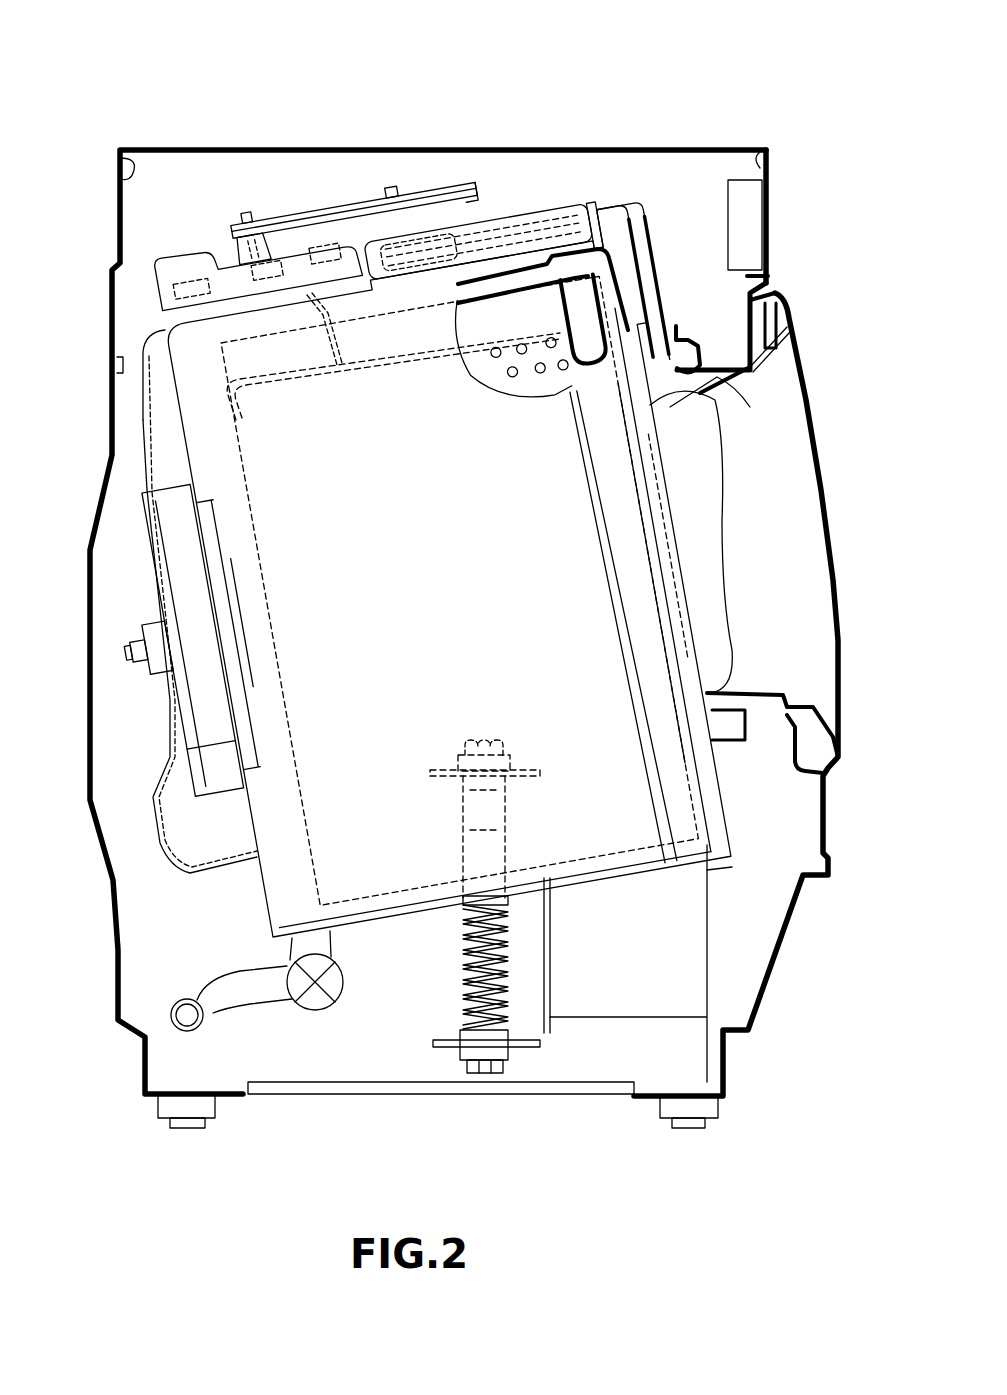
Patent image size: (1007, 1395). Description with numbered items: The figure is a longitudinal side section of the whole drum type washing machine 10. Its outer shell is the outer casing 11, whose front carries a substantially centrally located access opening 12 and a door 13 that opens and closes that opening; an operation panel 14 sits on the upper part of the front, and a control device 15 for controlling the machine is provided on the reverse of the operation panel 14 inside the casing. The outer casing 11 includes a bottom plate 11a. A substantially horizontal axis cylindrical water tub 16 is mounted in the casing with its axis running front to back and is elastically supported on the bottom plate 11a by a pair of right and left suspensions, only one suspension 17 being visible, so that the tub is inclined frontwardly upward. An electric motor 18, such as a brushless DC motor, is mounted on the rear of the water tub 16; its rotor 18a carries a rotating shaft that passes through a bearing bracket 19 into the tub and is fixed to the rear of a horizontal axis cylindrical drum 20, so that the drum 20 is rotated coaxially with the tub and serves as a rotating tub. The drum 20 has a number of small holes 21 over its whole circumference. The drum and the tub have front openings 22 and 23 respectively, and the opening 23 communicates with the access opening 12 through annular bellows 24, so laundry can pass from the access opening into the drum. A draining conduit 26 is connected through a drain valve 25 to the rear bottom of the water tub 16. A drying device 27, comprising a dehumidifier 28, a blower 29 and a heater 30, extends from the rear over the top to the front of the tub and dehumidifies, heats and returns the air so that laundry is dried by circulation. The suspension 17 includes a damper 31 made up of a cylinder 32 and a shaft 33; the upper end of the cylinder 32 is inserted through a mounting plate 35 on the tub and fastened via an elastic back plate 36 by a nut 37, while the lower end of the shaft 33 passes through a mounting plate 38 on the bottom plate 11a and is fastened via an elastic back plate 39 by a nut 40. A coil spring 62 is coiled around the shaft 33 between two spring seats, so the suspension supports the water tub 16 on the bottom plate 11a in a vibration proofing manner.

The drum type washing machine 10 is at (243, 112).
The outer casing 11 is at (412, 147).
The bottom plate 11a is at (655, 1100).
The access opening 12 is at (781, 300).
The door 13 is at (832, 478).
The operation panel 14 is at (772, 200).
The control device 15 is at (726, 214).
The water tub 16 is at (548, 262).
The suspension 17 is at (455, 922).
The electric motor 18 is at (143, 595).
The rotor 18a is at (195, 737).
The bearing bracket 19 is at (222, 598).
The drum 20 is at (525, 292).
The small holes 21 is at (522, 388).
The opening of drum 22 is at (662, 400).
The opening of water tub 23 is at (697, 340).
The bellows 24 is at (725, 382).
The drain valve 25 is at (315, 1012).
The draining conduit 26 is at (246, 1012).
The drying device 27 is at (150, 335).
The dehumidifier 28 is at (143, 425).
The blower 29 is at (178, 254).
The heater 30 is at (494, 216).
The damper 31 is at (508, 840).
The cylinder 32 is at (490, 808).
The shaft 33 is at (470, 985).
The mounting plate 35 is at (525, 769).
The elastic back plate 36 is at (455, 769).
The nut 37 is at (485, 740).
The mounting plate 38 is at (520, 1050).
The elastic back plate 39 is at (458, 1052).
The nut 40 is at (485, 1074).
The coil spring 62 is at (555, 968).